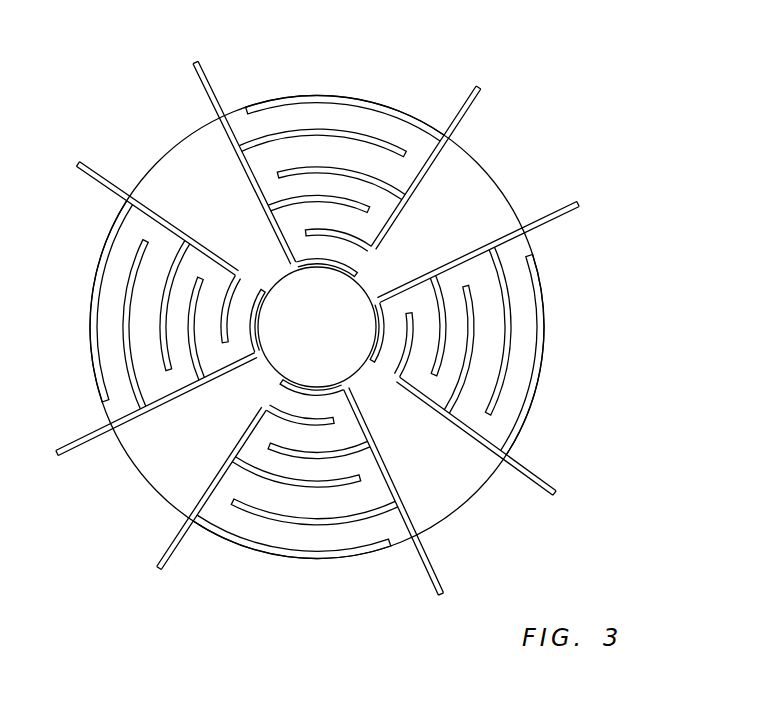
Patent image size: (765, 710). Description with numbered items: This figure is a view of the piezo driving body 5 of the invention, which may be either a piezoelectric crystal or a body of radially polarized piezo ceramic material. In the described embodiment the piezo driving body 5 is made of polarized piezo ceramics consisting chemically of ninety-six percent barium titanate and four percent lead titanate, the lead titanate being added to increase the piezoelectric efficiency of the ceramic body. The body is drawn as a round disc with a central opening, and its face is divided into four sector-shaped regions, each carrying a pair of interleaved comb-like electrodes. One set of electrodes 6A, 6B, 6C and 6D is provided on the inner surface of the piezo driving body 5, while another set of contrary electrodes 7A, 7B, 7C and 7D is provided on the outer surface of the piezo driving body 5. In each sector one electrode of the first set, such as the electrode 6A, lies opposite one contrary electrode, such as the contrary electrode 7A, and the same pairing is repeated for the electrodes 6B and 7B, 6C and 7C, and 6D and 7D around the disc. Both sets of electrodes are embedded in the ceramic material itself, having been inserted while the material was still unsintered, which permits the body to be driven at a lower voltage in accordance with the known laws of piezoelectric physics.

The piezo driving body 5 is at (458, 497).
The electrode 6A is at (196, 75).
The contrary electrode 7A is at (463, 102).
The electrode 6B is at (566, 211).
The contrary electrode 7B is at (541, 476).
The electrode 6C is at (433, 572).
The contrary electrode 7C is at (169, 549).
The electrode 6D is at (93, 441).
The contrary electrode 7D is at (93, 173).